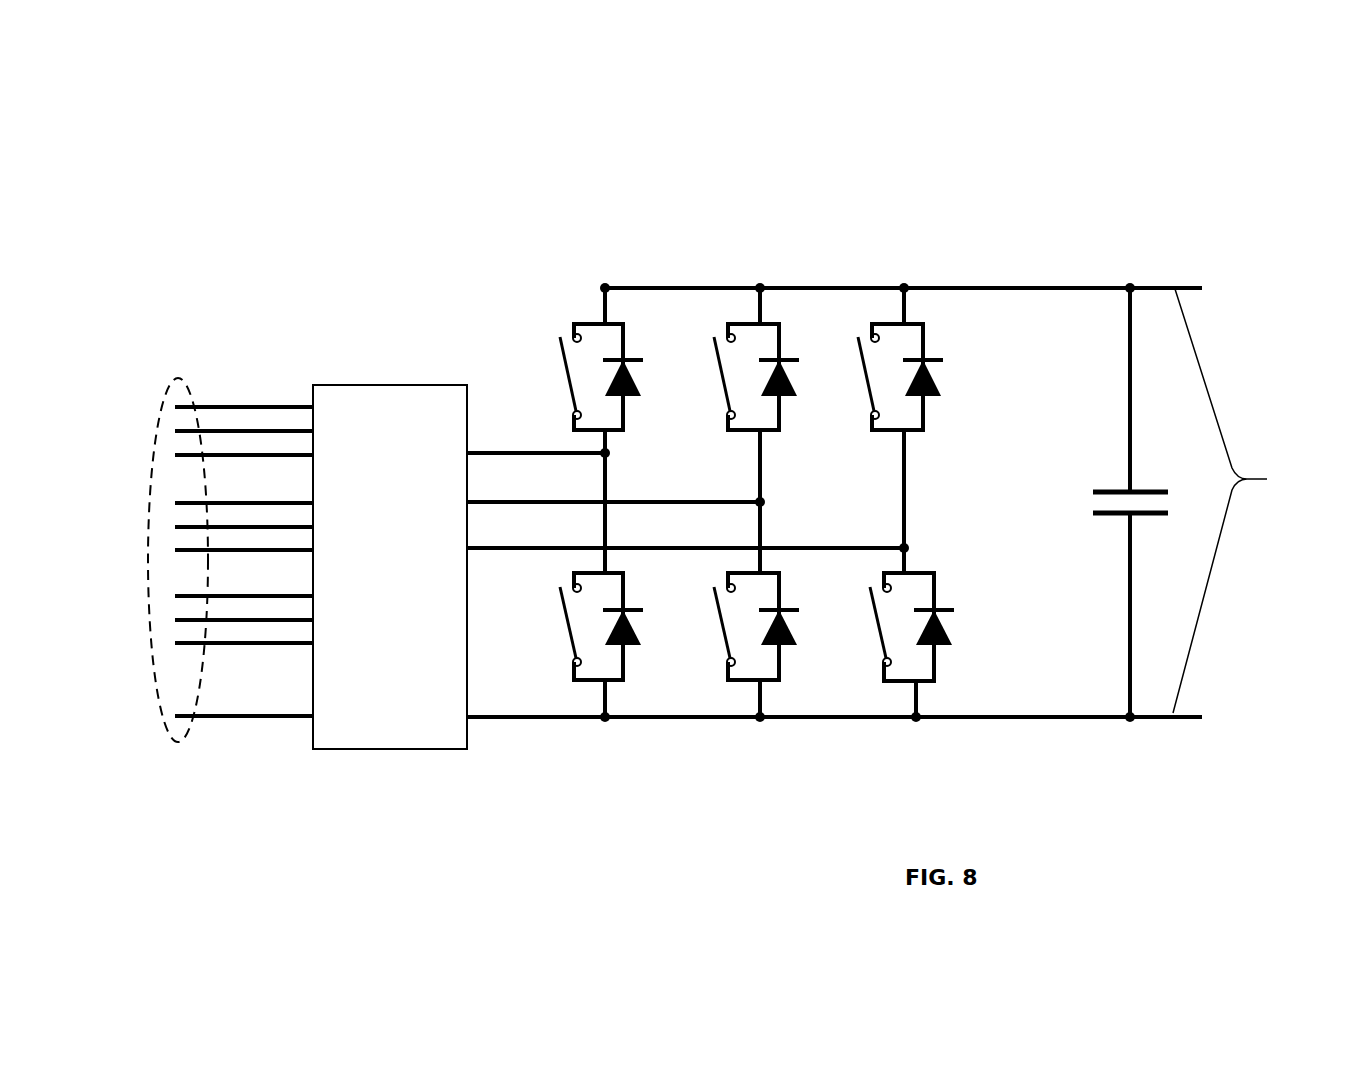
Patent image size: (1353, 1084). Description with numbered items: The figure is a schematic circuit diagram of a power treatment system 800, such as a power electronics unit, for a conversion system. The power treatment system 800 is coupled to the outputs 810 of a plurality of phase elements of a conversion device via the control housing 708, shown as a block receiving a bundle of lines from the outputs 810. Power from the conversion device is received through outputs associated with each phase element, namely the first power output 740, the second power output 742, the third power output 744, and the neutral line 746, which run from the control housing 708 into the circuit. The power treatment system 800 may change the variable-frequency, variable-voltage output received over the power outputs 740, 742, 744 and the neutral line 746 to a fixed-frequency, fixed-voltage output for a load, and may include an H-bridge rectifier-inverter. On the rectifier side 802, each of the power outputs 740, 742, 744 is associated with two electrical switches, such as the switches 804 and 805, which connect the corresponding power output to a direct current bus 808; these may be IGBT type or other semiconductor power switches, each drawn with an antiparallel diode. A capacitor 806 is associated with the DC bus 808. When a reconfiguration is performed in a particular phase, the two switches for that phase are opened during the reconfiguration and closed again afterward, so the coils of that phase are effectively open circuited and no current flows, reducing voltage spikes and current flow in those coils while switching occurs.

The power treatment system 800 is at (533, 166).
The rectifier side 802 is at (892, 238).
The switch 804 is at (560, 358).
The switch 805 is at (560, 627).
The capacitor 806 is at (1108, 517).
The direct current (DC) bus 808 is at (1246, 501).
The outputs 810 is at (168, 385).
The control housing 708 is at (394, 385).
The first power output 740 is at (565, 450).
The second power output 742 is at (570, 498).
The third power output 744 is at (565, 547).
The neutral line 746 is at (508, 718).